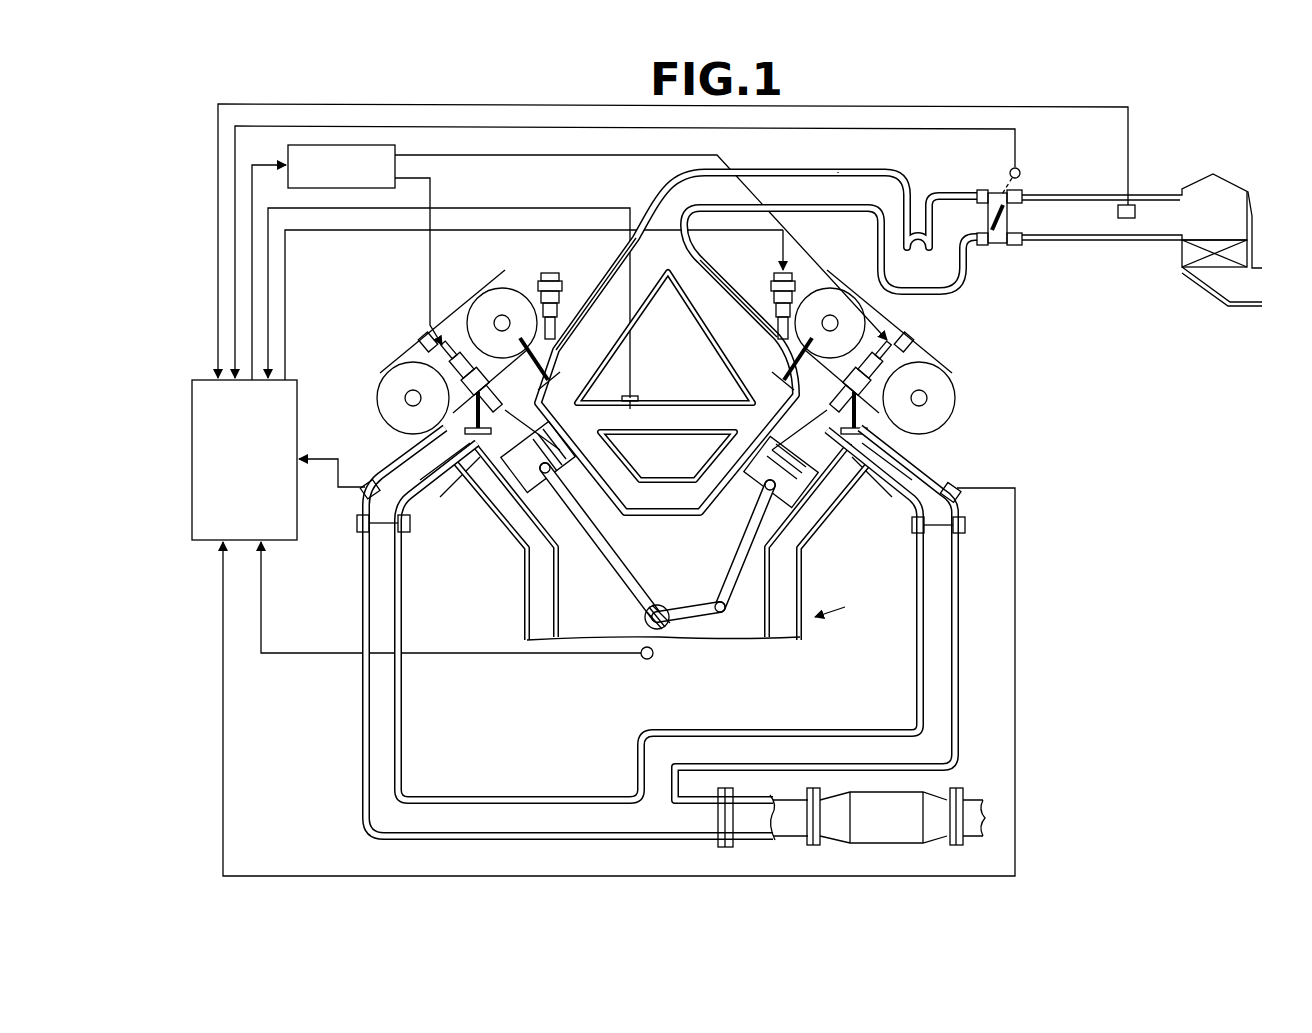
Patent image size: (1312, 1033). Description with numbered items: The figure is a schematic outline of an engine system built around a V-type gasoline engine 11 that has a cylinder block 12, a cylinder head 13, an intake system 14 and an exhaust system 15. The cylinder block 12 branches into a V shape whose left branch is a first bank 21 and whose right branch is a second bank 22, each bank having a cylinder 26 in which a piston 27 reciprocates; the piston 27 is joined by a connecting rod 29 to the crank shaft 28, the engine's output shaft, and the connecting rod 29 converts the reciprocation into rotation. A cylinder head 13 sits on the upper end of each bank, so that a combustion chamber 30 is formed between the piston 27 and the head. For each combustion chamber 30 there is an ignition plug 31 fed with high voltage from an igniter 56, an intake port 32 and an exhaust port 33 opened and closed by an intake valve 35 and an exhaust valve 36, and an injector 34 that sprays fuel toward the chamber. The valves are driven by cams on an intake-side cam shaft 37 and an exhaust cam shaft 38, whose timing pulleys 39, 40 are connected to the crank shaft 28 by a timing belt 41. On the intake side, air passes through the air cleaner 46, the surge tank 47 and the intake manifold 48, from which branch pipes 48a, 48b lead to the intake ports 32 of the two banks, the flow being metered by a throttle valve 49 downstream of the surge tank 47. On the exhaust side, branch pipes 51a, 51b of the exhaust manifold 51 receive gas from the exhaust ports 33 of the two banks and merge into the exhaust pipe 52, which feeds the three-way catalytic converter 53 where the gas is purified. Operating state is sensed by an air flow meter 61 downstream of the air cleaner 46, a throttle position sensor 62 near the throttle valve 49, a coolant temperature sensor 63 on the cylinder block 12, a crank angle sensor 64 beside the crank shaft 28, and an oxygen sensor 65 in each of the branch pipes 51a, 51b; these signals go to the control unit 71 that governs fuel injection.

The V-type gasoline engine 11 is at (845, 607).
The cylinder block 12 is at (662, 541).
The cylinder head 13 is at (393, 430).
The intake system 14 is at (838, 172).
The exhaust system 15 is at (671, 651).
The first bank 21 is at (523, 555).
The second bank 22 is at (805, 520).
The cylinder 26 is at (612, 480).
The piston 27 is at (590, 530).
The crank shaft 28 is at (660, 605).
The connecting rod 29 is at (612, 505).
The combustion chamber 30 is at (508, 440).
The ignition plug 31 is at (452, 333).
The intake port 32 is at (545, 385).
The exhaust port 33 is at (465, 460).
The injector 34 is at (562, 290).
The intake valve 35 is at (580, 401).
The exhaust valve 36 is at (520, 425).
The intake-side cam shaft 37 is at (496, 318).
The exhaust cam shaft 38 is at (405, 400).
The timing pulley 39 is at (510, 290).
The timing pulley 40 is at (385, 372).
The timing belt 41 is at (422, 340).
The air cleaner 46 is at (1245, 185).
The surge tank 47 is at (985, 192).
The intake manifold 48 is at (750, 172).
The branch pipe 48a is at (662, 300).
The branch pipe 48b is at (717, 337).
The throttle valve 49 is at (998, 205).
The exhaust manifold 51 is at (635, 840).
The branch pipe 51a is at (505, 798).
The branch pipe 51b is at (790, 730).
The exhaust pipe 52 is at (740, 842).
The three-way catalytic converter 53 is at (880, 843).
The igniter 56 is at (395, 148).
The air flow meter 61 is at (1118, 205).
The throttle position sensor 62 is at (1020, 173).
The coolant temperature sensor 63 is at (638, 398).
The crank angle sensor 64 is at (648, 660).
The oxygen sensor 65 is at (362, 492).
The ECU (electronic control unit) 71 is at (205, 380).